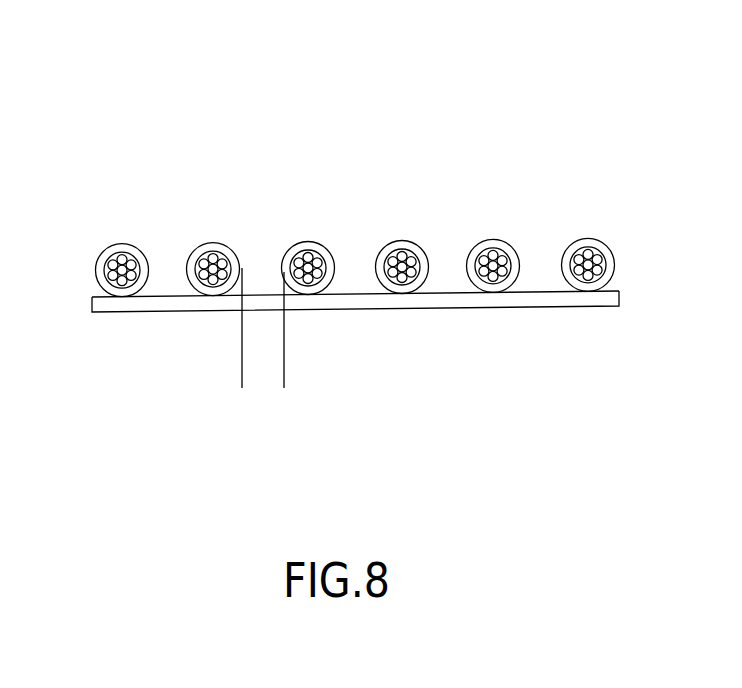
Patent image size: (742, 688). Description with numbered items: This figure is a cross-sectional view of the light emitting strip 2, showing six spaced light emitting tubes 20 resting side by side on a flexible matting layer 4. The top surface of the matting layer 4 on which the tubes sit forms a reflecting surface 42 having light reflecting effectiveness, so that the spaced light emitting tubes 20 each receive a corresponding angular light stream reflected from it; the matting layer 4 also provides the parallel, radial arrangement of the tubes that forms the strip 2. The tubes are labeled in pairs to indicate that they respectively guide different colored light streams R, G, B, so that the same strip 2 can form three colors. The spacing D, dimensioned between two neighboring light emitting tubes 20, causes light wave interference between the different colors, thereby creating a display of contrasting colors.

The strip 2 is at (252, 237).
The flexible matting layer 4 is at (355, 233).
The reflecting surface 42 is at (452, 295).
The light emitting tubes 20 is at (604, 259).
The red light stream R is at (147, 171).
The green light stream G is at (297, 242).
The blue light stream B is at (605, 209).
The spacing between light emitting tubes D is at (322, 382).